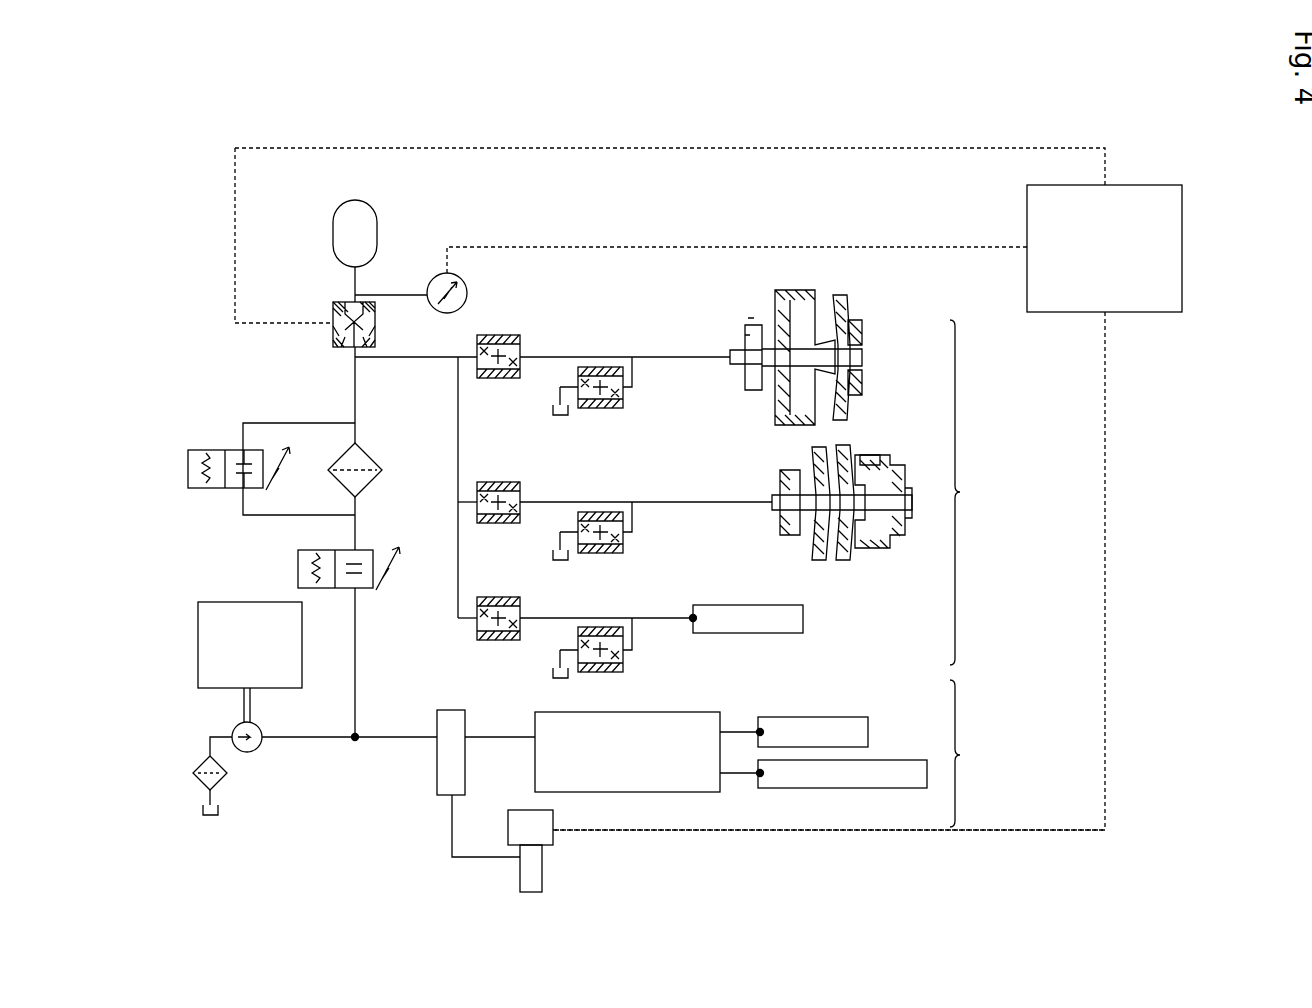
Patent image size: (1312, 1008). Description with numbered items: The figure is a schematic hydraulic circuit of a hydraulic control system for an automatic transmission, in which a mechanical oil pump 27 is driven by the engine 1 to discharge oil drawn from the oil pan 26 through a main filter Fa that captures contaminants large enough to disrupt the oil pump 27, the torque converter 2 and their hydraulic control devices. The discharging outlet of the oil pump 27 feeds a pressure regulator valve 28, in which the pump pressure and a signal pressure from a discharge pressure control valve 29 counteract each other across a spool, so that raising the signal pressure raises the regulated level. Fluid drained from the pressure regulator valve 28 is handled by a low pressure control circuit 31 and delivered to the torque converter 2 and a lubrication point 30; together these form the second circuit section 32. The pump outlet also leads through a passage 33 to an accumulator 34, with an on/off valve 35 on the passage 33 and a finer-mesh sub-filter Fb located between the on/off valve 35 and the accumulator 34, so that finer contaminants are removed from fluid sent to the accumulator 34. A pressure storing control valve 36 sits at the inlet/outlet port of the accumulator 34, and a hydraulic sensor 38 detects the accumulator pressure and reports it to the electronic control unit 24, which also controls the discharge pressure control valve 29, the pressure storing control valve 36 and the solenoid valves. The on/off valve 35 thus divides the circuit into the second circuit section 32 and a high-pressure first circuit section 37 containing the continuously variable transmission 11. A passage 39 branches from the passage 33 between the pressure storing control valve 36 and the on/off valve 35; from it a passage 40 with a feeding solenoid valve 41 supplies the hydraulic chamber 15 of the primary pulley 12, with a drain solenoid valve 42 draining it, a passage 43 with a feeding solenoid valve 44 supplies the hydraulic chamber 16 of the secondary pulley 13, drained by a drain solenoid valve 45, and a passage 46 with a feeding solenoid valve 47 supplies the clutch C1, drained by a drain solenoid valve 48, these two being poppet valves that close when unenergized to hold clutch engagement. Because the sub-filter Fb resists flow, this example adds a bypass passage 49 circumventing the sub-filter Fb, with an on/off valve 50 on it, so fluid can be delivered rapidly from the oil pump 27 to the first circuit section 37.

The engine 1 is at (228, 600).
The torque converter 2 is at (870, 720).
The continuously variable transmission 11 is at (822, 270).
The primary pulley 12 is at (858, 307).
The secondary pulley 13 is at (842, 517).
The hydraulic chamber 15 is at (748, 308).
The hydraulic chamber 16 is at (873, 474).
The electronic control unit 24 is at (1148, 186).
The oil pan 26 is at (200, 810).
The oil pump 27 is at (250, 752).
The pressure regulator valve 28 is at (437, 780).
The discharge pressure control valve 29 is at (548, 848).
The lubrication point 30 is at (910, 760).
The low pressure control circuit 31 is at (697, 712).
The second circuit section 32 is at (1013, 753).
The passage 33 is at (352, 394).
The accumulator 34 is at (333, 224).
The on/off valve 35 is at (298, 548).
The pressure storing control valve 36 is at (335, 348).
The first circuit section 37 is at (1010, 492).
The hydraulic sensor 38 is at (467, 293).
The passage 39 is at (405, 358).
The passage 40 is at (688, 357).
The feeding solenoid valve 41 is at (510, 335).
The drain solenoid valve 42 is at (612, 408).
The passage 43 is at (716, 502).
The feeding solenoid valve 44 is at (492, 482).
The drain solenoid valve 45 is at (606, 553).
The passage 46 is at (662, 618).
The feeding solenoid valve 47 is at (490, 597).
The drain solenoid valve 48 is at (612, 672).
The bypass passage 49 is at (234, 504).
The on/off valve 50 is at (190, 445).
The main filter Fa is at (197, 762).
The sub-filter Fb is at (371, 440).
The clutch C1 is at (780, 605).